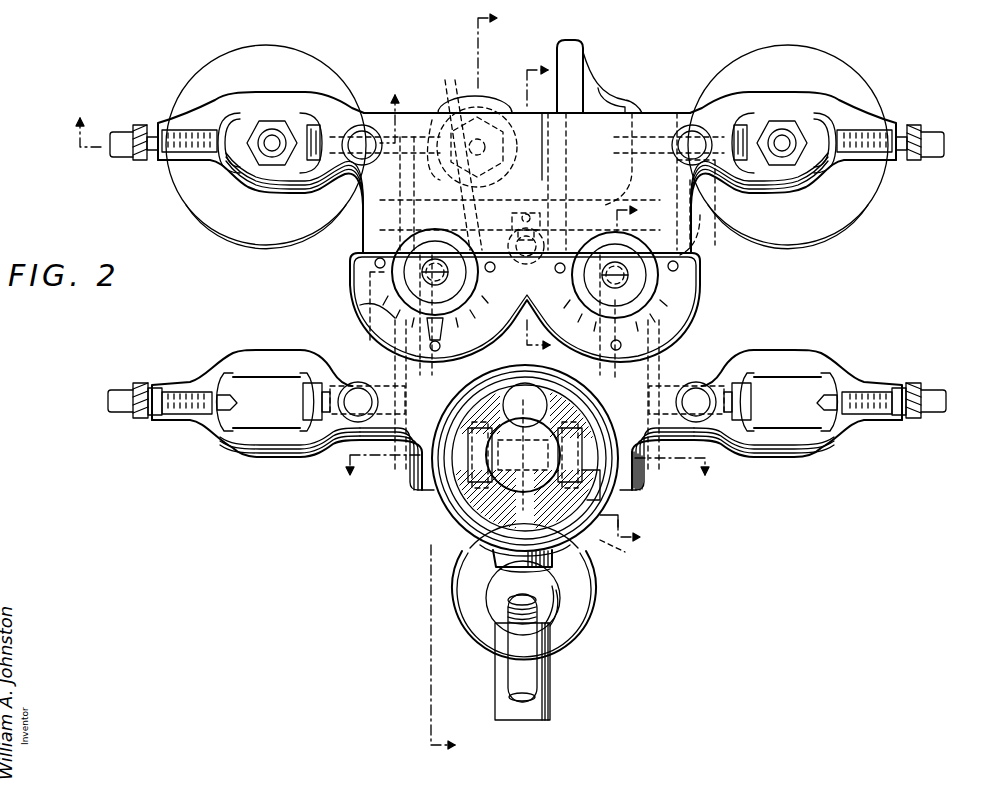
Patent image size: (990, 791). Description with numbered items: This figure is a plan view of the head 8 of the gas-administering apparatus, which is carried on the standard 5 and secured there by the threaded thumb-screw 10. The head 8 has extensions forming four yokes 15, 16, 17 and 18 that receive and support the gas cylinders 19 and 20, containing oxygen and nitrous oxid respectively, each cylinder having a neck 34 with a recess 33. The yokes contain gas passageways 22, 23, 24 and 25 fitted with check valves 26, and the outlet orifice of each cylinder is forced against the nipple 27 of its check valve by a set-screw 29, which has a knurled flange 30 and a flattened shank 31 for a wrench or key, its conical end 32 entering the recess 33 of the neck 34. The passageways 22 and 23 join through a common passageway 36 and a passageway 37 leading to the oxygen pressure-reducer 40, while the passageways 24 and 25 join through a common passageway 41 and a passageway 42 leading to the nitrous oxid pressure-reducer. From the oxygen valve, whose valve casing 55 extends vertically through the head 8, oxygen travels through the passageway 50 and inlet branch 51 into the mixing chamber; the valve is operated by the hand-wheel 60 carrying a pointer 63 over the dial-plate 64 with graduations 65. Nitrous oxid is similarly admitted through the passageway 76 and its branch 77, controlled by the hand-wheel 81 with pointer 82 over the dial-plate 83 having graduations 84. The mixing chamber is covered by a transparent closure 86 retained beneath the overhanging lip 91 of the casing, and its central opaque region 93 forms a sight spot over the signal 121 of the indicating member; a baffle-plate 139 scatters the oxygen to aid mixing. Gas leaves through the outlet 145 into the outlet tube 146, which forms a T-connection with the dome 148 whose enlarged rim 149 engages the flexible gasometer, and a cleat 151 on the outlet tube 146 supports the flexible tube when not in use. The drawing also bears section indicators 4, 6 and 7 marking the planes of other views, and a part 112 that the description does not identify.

The section line 4- 4 is at (235, 124).
The standard 5 is at (450, 385).
The section line 6- 6 is at (618, 378).
The section line 7- 7 is at (527, 212).
The head 8 is at (527, 181).
The threaded thumb-screw 10 is at (521, 483).
The yoke 15 is at (268, 92).
The yoke 16 is at (274, 351).
The yoke 17 is at (784, 92).
The yoke 18 is at (784, 351).
The gas cylinder 19 is at (246, 243).
The gas cylinder 20 is at (812, 245).
The gas passageway 22 is at (352, 127).
The gas passageway 23 is at (338, 446).
The gas passageway 24 is at (700, 127).
The gas passageway 25 is at (722, 446).
The check valve 26 is at (318, 162).
The nipple 27 is at (296, 404).
The set-screw 29 is at (176, 130).
The knurled flange 30 is at (916, 125).
The flattened shank 31 is at (124, 157).
The conical end 32 is at (242, 430).
The recess 33 is at (236, 186).
The neck 34 is at (222, 125).
The common passageway 36 is at (362, 240).
The passageway 37 is at (460, 98).
The pressure-reducer 40 is at (612, 75).
The common passageway 41 is at (696, 252).
The passageway 42 is at (652, 450).
The passageway 50 is at (430, 452).
The inlet branch 51 is at (470, 492).
The valve casing 55 is at (452, 484).
The hand-wheel 60 is at (420, 250).
The pointer 63 is at (428, 348).
The dial-plate 64 is at (372, 292).
The graduations 65 is at (372, 312).
The passageway 76 is at (648, 357).
The branch 77 is at (606, 497).
The hand-wheel 81 is at (660, 292).
The pointer 82 is at (540, 258).
The dial-plate 83 is at (675, 312).
The graduations 84 is at (680, 330).
The closure 86 is at (620, 520).
The overhanging lip 91 is at (500, 567).
The central opaque region 93 is at (493, 553).
The passage 112 is at (674, 526).
The signal 121 is at (478, 546).
The baffle-plate 139 is at (588, 548).
The outlet 145 is at (452, 362).
The outlet tube 146 is at (550, 697).
The dome 148 is at (570, 592).
The enlarged rim 149 is at (595, 620).
The cleat 151 is at (540, 664).